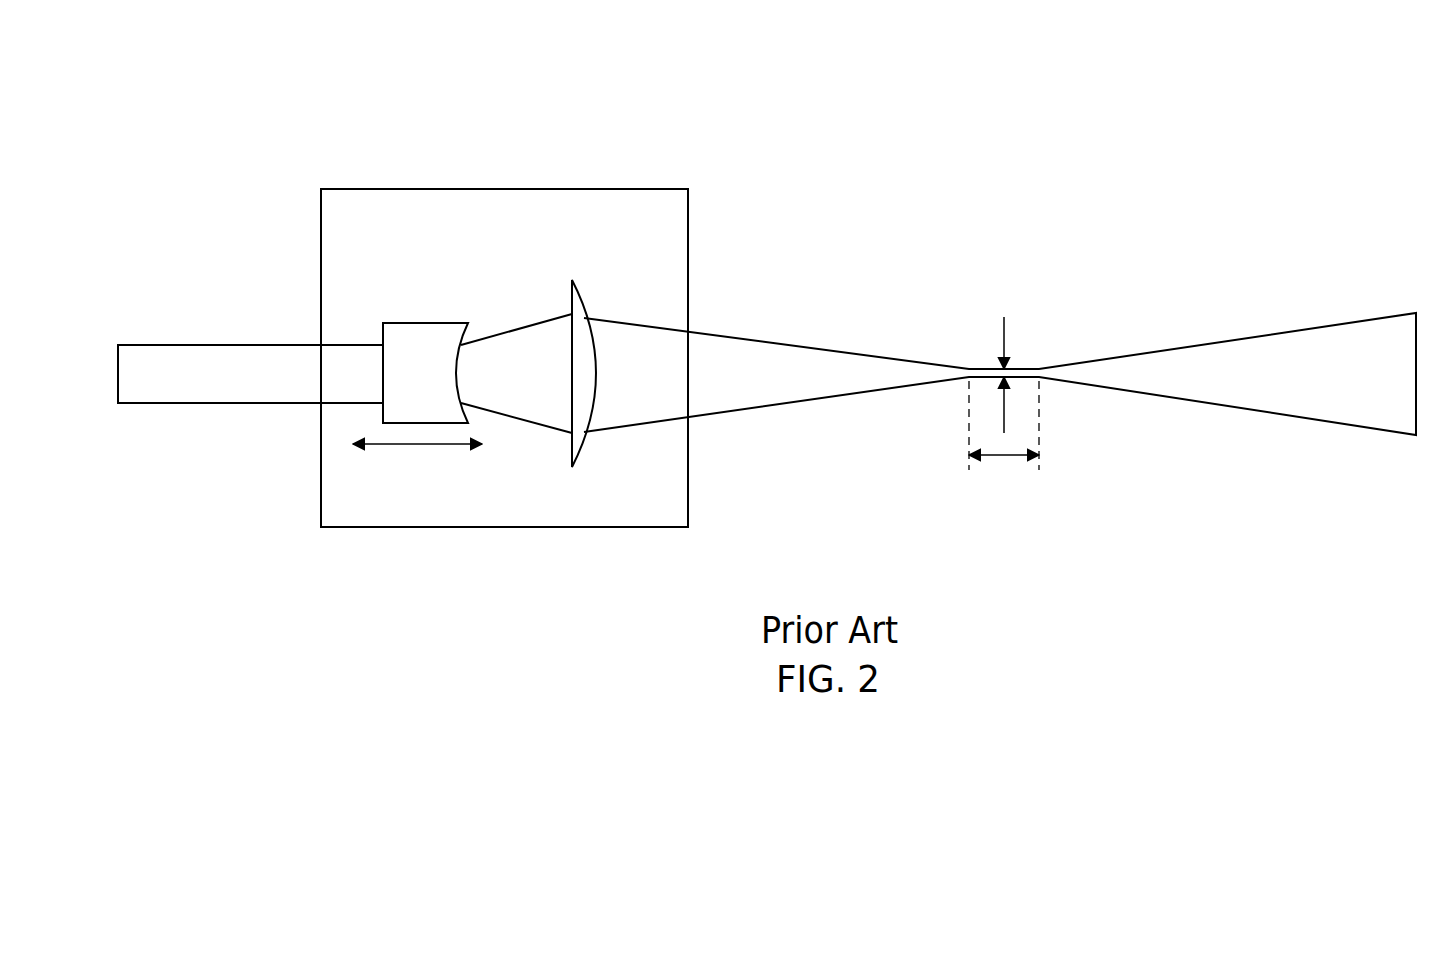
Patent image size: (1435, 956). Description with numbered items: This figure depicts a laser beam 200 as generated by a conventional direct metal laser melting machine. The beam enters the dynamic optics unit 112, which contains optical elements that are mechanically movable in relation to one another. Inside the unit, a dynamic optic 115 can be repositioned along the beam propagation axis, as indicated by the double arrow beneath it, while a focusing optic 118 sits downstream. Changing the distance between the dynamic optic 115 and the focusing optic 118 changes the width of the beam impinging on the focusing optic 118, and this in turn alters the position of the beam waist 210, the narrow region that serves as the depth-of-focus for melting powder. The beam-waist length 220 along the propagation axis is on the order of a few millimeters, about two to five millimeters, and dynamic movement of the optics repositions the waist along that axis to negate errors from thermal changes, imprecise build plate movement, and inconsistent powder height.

The laser beam 200 is at (1124, 101).
The dynamic optics unit 112 is at (503, 189).
The dynamic optic 115 is at (410, 323).
The focusing optic 118 is at (582, 297).
The beam waist 210 is at (1003, 327).
The beam-waist length 220 is at (1004, 458).